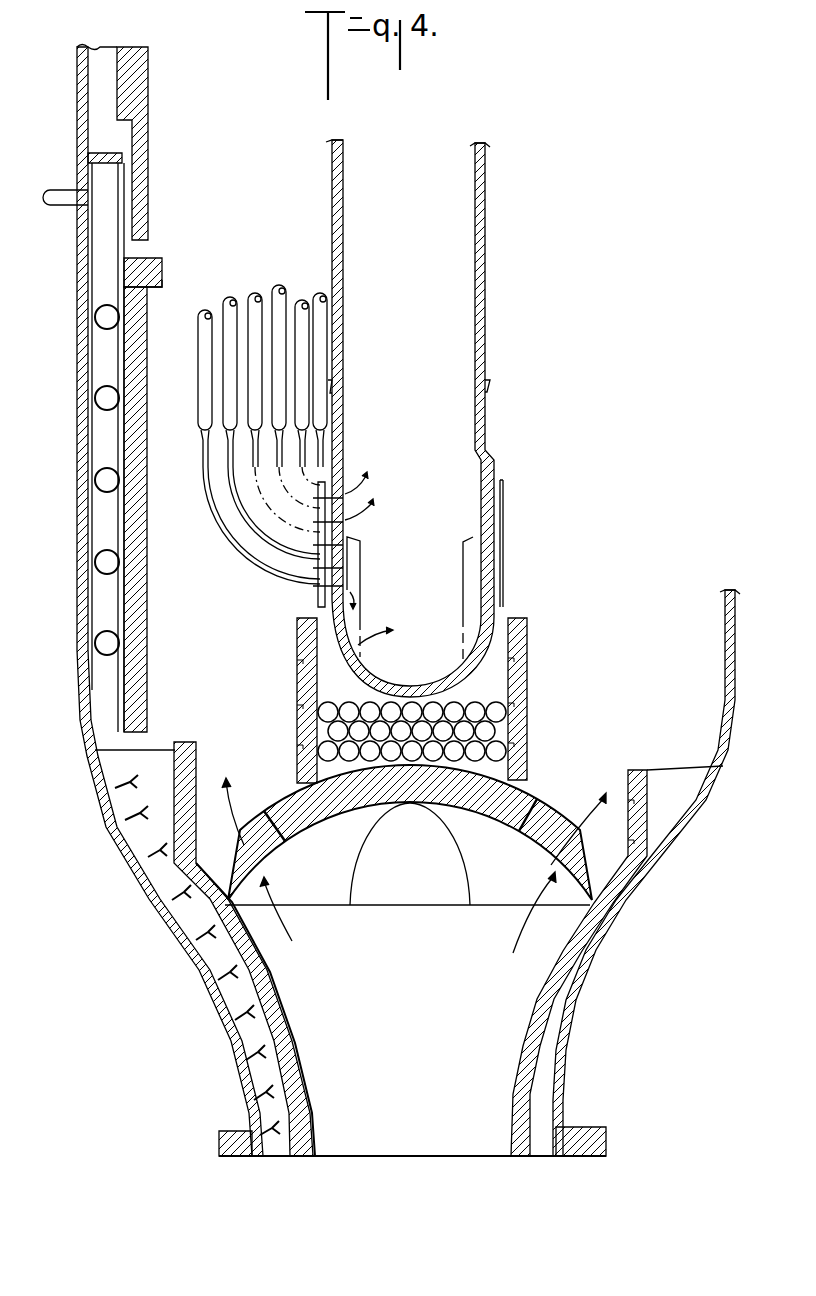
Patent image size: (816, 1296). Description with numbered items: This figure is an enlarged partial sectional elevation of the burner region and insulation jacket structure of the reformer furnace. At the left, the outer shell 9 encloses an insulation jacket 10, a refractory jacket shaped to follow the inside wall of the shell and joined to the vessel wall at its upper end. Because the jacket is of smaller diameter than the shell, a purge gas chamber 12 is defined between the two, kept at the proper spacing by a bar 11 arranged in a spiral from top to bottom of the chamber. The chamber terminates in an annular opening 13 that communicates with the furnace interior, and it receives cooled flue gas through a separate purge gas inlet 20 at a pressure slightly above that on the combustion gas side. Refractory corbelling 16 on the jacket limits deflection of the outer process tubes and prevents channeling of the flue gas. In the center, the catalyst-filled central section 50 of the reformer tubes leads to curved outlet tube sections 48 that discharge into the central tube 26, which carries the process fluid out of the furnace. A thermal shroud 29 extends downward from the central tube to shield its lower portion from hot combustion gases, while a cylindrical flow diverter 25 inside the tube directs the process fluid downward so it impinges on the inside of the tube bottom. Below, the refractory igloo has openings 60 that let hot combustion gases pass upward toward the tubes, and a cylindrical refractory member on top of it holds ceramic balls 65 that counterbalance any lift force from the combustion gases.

The outer shell 9 is at (77, 358).
The insulation jacket 10 is at (125, 608).
The bar 11 is at (100, 486).
The purge gas chamber 12 is at (105, 433).
The annular opening 13 is at (138, 247).
The refractory corbelling 16 is at (163, 289).
The purge gas inlet 20 is at (58, 192).
The flow diverter 25 is at (465, 592).
The central tube 26 is at (487, 352).
The thermal shroud 29 is at (504, 521).
The outlet tube section 48 is at (259, 570).
The central section 50 is at (322, 345).
The opening 60 is at (245, 832).
The ceramic ball 65 is at (490, 727).